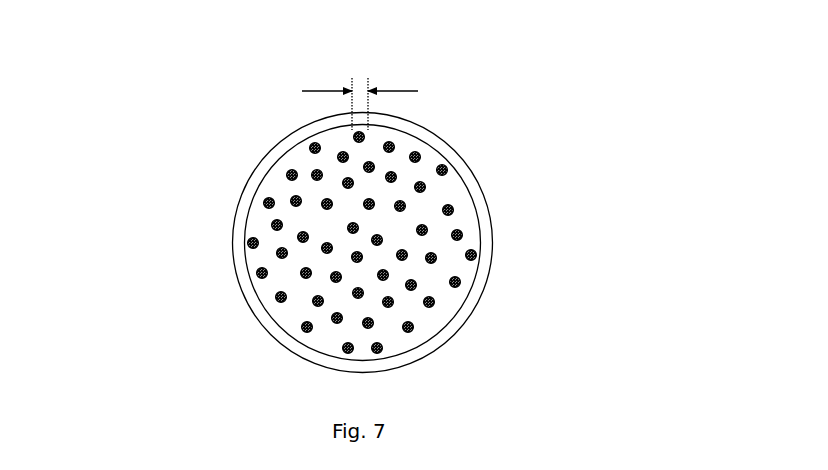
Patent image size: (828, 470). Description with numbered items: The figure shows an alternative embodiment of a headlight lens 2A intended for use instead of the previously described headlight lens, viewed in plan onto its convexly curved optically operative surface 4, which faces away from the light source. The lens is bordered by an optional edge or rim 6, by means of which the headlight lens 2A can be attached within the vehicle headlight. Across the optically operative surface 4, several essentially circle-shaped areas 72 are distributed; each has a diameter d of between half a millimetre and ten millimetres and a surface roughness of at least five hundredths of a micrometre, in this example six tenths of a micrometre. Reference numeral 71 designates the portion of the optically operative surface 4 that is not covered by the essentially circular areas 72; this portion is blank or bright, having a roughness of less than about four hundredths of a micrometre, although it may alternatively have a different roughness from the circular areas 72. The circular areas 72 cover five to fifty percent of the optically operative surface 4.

The headlight lens 2A is at (336, 214).
The optically operative surface 4 is at (250, 222).
The edge or rim 6 is at (477, 193).
The portion of the optically operative surface 71 is at (444, 293).
The essentially circle-shaped areas 72 is at (278, 298).